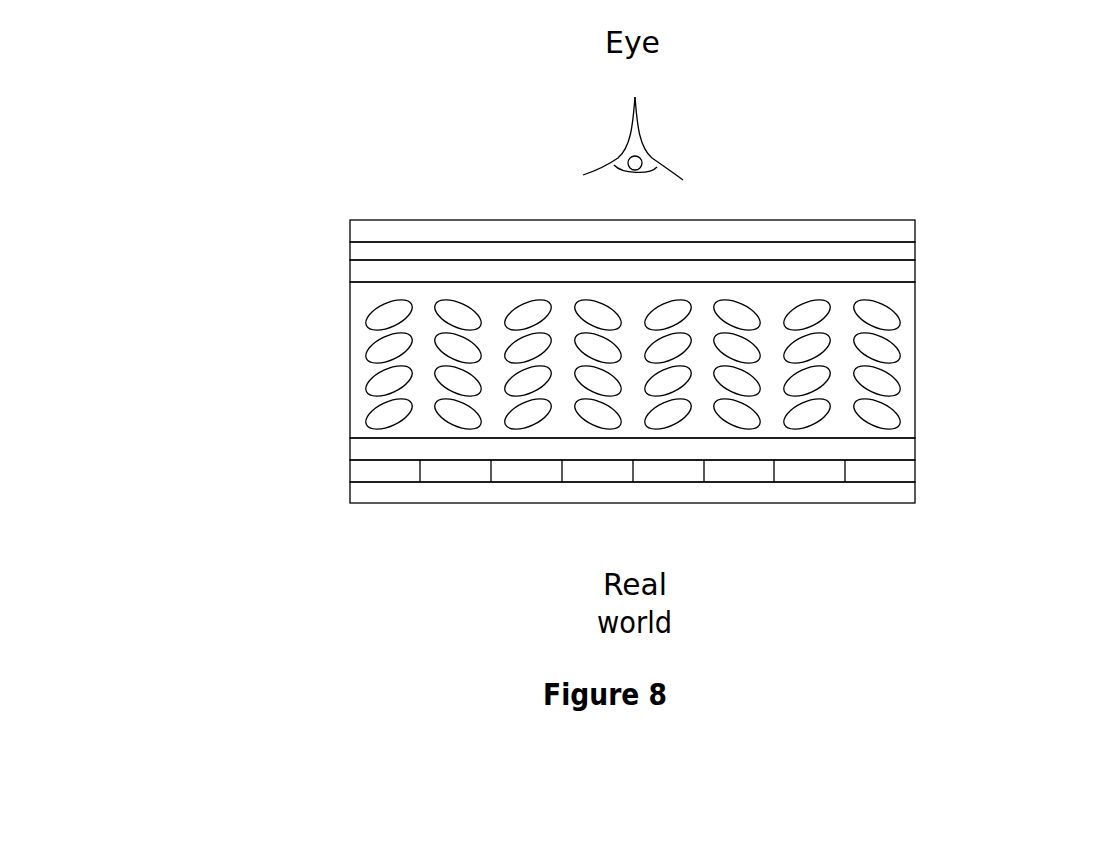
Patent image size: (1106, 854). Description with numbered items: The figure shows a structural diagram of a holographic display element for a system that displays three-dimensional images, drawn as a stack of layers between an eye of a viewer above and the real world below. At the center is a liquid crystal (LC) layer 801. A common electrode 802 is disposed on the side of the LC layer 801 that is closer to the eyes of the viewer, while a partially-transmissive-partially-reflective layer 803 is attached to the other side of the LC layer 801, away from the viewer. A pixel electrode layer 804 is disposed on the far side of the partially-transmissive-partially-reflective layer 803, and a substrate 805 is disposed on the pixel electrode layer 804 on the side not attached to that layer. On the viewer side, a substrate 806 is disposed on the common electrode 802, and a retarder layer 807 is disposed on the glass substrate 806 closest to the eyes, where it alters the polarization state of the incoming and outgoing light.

The liquid crystal layer 801 is at (348, 360).
The common electrode 802 is at (348, 272).
The partially-transmissive-partially-reflective layer 803 is at (918, 450).
The pixel electrode layer 804 is at (348, 472).
The substrate 805 is at (918, 492).
The substrate 806 is at (918, 252).
The retarder layer 807 is at (918, 232).